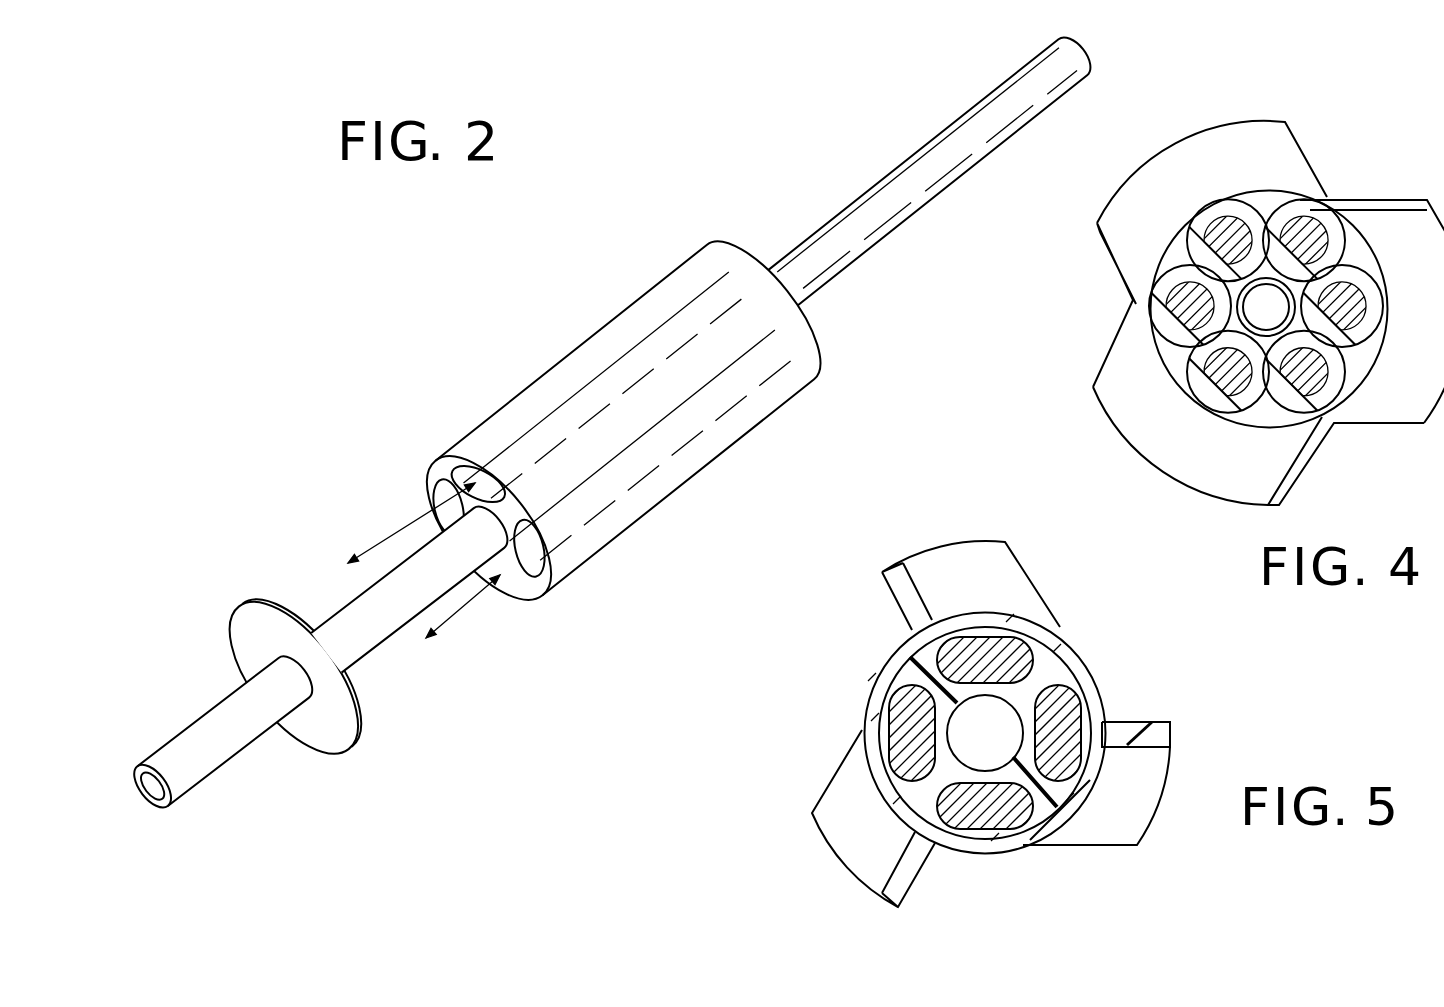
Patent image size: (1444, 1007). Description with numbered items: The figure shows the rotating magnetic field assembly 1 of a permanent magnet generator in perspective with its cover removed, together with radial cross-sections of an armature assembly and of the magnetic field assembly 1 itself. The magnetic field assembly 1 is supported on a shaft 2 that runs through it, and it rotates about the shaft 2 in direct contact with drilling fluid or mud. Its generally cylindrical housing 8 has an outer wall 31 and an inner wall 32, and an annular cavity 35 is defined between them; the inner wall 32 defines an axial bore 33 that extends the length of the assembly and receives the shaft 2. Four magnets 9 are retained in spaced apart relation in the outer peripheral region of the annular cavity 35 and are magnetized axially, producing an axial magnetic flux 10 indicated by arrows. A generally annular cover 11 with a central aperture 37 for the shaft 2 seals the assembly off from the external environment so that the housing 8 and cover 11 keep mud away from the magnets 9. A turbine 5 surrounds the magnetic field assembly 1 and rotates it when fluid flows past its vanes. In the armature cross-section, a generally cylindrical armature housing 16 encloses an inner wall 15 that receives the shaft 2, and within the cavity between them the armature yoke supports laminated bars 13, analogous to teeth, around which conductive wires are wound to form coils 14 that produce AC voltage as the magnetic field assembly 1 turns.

In FIG. 2, the shaft 2 is at (200, 777).
In FIG. 2, the magnetic field assembly housing 8 is at (744, 438).
In FIG. 5, the magnetic field assembly housing 8 is at (983, 732).
In FIG. 2, the magnets 9 is at (500, 597).
In FIG. 5, the magnets 9 is at (993, 640).
In FIG. 2, the axial magnetic flux 10 is at (412, 521).
In FIG. 2, the cover 11 is at (345, 741).
In FIG. 2, the outer wall 31 is at (667, 482).
In FIG. 2, the inner wall 32 is at (519, 512).
In FIG. 5, the axial bore 33 is at (1007, 703).
In FIG. 2, the annular cavity 35 is at (438, 465).
In FIG. 2, the central aperture 37 is at (305, 643).
In FIG. 4, the laminated bars 13 is at (1227, 387).
In FIG. 4, the coils 14 is at (1370, 337).
In FIG. 4, the inner wall 15 is at (1292, 293).
In FIG. 4, the armature housing 16 is at (1273, 200).
In FIG. 5, the turbine 5 is at (1147, 717).
In FIG. 5, the magnetic field assembly 1 is at (1040, 803).